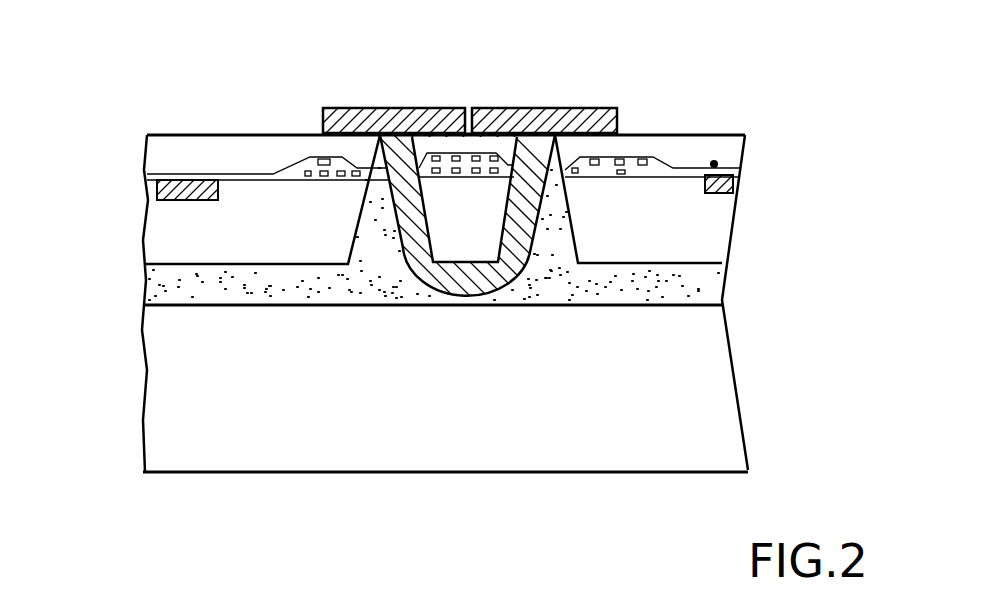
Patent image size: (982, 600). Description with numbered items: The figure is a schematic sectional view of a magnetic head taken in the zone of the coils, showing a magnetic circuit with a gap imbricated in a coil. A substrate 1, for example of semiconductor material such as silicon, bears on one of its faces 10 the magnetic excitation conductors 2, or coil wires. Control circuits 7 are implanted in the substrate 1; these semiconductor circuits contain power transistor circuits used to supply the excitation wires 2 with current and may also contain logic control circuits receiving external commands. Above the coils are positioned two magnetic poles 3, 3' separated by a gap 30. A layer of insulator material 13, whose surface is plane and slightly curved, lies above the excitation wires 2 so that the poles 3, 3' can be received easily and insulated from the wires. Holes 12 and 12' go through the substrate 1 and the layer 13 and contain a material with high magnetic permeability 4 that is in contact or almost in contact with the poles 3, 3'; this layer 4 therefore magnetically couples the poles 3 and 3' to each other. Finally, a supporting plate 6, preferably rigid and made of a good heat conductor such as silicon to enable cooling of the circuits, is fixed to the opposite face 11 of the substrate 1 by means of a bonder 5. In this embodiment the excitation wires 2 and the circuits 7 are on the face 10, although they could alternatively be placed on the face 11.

The substrate 1 is at (715, 212).
The magnetic excitation conductors 2 is at (432, 142).
The magnetic pole 3 is at (391, 91).
The magnetic pole 3' is at (547, 95).
The material with high magnetic permeability 4 is at (568, 160).
The bonder 5 is at (677, 293).
The supporting plate 6 is at (731, 448).
The control circuit 7 is at (166, 185).
The face of the substrate 10 is at (715, 162).
The face of the substrate 11 is at (671, 262).
The hole 12 is at (320, 174).
The hole 12' is at (585, 212).
The layer of insulator material 13 is at (693, 147).
The gap 30 is at (470, 96).